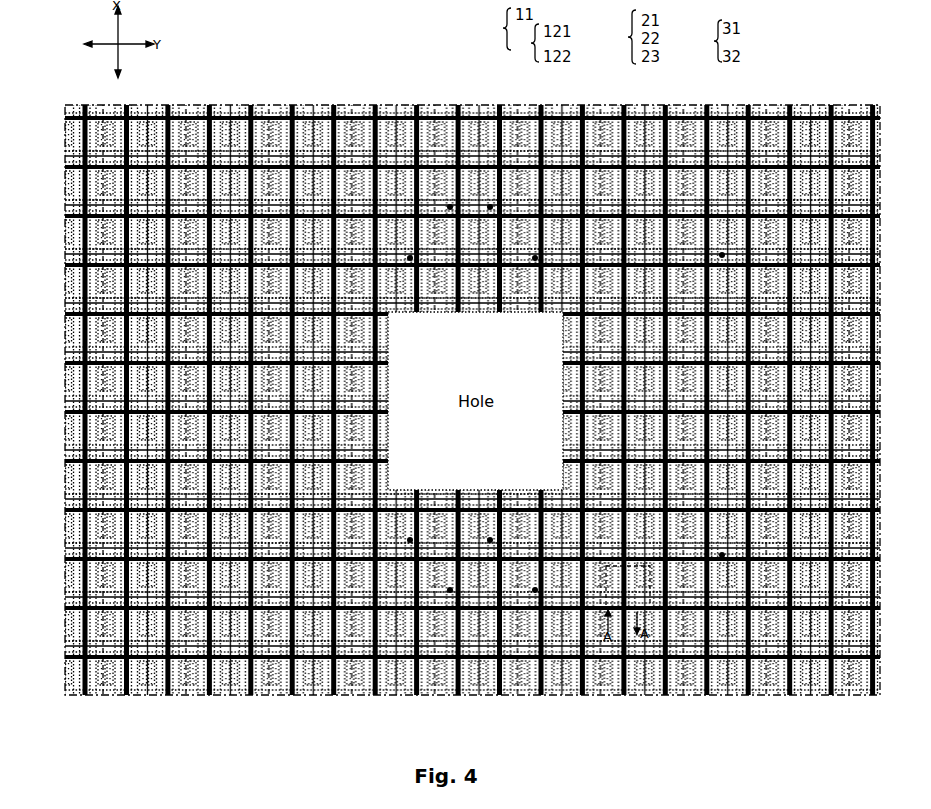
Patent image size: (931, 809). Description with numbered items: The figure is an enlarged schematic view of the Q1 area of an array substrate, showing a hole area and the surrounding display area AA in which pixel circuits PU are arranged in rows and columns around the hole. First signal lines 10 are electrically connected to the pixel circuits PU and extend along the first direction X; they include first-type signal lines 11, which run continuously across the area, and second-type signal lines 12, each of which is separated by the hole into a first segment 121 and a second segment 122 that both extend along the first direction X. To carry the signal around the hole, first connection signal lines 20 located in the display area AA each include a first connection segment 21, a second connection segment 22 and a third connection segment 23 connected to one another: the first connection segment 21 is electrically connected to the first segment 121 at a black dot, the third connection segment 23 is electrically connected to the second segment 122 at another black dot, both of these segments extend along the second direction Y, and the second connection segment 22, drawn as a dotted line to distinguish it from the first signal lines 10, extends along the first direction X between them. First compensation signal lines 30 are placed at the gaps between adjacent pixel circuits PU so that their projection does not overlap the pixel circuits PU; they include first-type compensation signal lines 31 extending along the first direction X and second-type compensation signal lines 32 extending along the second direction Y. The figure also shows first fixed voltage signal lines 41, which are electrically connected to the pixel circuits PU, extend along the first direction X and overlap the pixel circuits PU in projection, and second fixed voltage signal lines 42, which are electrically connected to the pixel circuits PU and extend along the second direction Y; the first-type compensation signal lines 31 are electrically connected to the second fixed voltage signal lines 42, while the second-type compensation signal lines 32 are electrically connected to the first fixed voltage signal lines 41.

The first signal line 10 is at (496, 32).
The first-type signal line 11 is at (196, 680).
The second-type signal line 12 is at (522, 44).
The first segment 121 is at (452, 686).
The second segment 122 is at (410, 130).
The first connection signal line 20 is at (617, 39).
The first connection segment 21 is at (352, 680).
The second connection segment 22 is at (228, 480).
The third connection segment 23 is at (347, 205).
The first compensation signal line 30 is at (704, 44).
The first-type compensation signal line 31 is at (231, 680).
The second-type compensation signal line 32 is at (67, 645).
The first fixed voltage signal line 41 is at (128, 680).
The second fixed voltage signal line 42 is at (67, 607).
The display area AA is at (67, 258).
The pixel circuit PU is at (70, 331).
The Q1 area Q1 is at (67, 688).